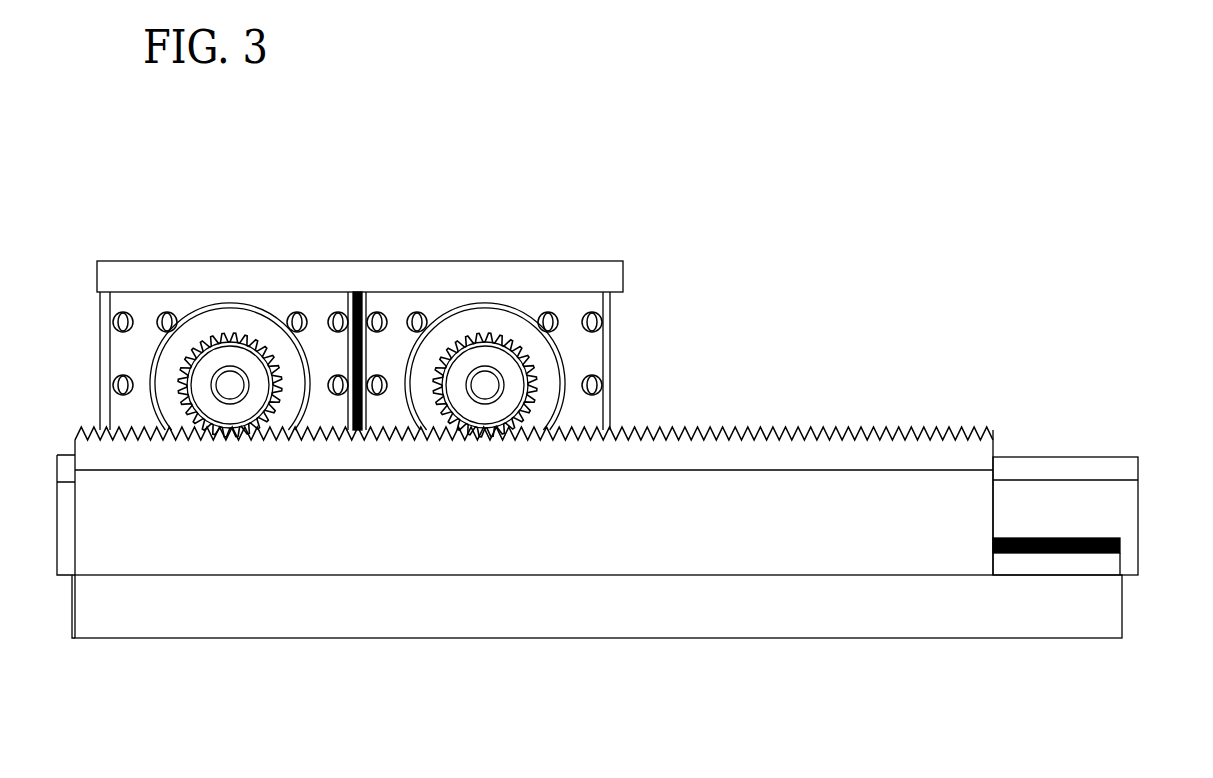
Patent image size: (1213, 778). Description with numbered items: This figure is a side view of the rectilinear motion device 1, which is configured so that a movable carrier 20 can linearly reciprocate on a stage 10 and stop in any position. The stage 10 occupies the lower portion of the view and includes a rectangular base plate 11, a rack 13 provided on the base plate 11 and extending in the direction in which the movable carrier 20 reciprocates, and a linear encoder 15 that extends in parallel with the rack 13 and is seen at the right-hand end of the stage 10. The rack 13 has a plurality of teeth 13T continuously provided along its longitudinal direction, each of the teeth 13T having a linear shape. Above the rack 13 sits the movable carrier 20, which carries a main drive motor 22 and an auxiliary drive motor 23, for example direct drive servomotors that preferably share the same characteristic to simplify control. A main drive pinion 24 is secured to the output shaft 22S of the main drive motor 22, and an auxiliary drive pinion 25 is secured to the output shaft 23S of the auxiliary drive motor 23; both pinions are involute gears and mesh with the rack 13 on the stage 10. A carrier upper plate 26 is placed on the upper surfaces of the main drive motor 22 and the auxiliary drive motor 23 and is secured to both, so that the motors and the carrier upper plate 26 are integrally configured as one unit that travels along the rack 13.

The rectilinear motion device 1 is at (793, 233).
The stage 10 is at (920, 638).
The base plate 11 is at (1122, 613).
The rack 13 is at (572, 450).
The teeth 13T is at (687, 428).
The linear encoder 15 is at (1110, 457).
The movable carrier 20 is at (364, 451).
The main drive motor 22 is at (143, 327).
The output shaft of the main drive motor 22S is at (230, 383).
The auxiliary drive motor 23 is at (580, 305).
The output shaft of the auxiliary drive motor 23S is at (485, 383).
The main drive pinion 24 is at (282, 402).
The auxiliary drive pinion 25 is at (533, 402).
The carrier upper plate 26 is at (453, 261).